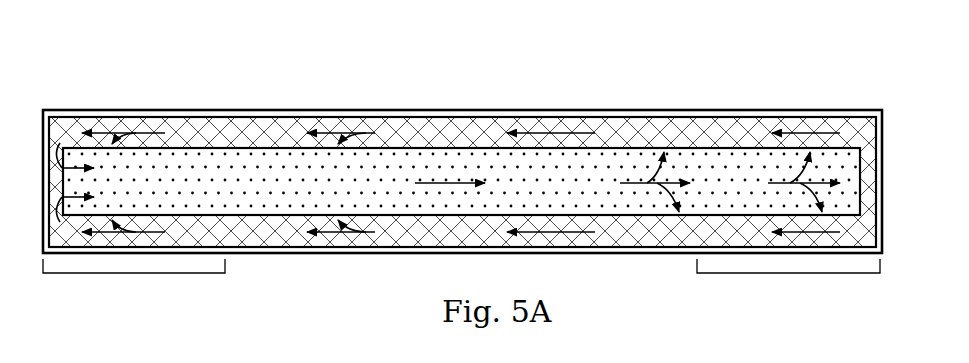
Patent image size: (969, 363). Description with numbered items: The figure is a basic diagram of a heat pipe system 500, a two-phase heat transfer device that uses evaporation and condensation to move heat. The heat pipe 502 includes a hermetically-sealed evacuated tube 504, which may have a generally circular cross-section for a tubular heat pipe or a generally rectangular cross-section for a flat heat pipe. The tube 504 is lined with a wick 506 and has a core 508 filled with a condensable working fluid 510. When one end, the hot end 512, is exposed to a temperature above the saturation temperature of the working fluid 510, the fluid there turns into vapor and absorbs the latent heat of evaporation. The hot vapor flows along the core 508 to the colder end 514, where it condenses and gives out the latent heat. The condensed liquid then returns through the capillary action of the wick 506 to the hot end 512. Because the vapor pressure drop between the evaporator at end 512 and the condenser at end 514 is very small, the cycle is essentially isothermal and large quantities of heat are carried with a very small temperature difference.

The heat pipe system 500 is at (438, 106).
The heat pipe 502 is at (115, 110).
The hermetically-sealed evacuated tube 504 is at (188, 116).
The wick 506 is at (265, 144).
The core 508 is at (609, 148).
The condensable working fluid 510 is at (722, 158).
The hot end 512 is at (131, 273).
The cold end 514 is at (787, 273).